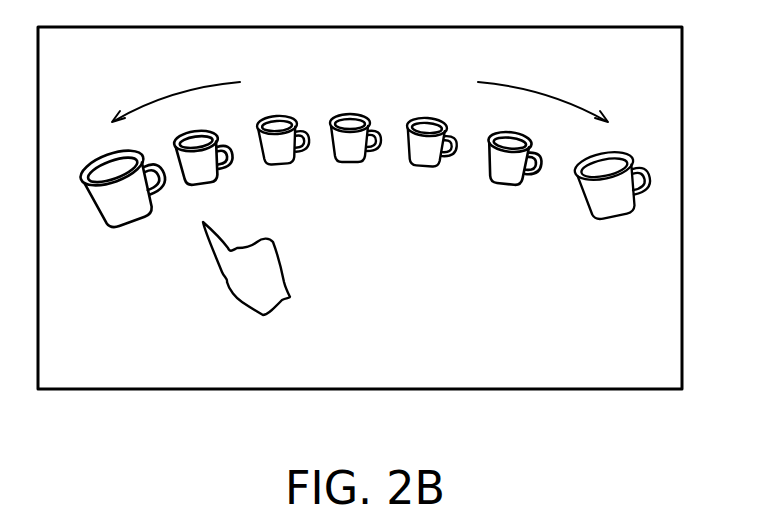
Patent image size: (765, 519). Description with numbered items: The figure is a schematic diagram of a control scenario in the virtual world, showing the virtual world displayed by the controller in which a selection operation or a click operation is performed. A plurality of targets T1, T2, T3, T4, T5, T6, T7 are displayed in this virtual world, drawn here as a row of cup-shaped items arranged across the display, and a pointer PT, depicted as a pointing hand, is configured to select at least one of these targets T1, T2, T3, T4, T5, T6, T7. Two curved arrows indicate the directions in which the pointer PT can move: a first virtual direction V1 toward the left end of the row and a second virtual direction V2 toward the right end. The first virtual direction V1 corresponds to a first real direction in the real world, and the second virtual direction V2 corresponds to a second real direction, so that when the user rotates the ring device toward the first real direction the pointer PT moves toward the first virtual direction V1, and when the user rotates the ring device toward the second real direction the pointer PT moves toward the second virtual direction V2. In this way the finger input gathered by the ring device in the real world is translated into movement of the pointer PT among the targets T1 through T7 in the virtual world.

The first virtual direction V1 is at (176, 91).
The second virtual direction V2 is at (543, 90).
The target T1 is at (127, 212).
The target T2 is at (210, 170).
The target T3 is at (280, 158).
The target T4 is at (350, 153).
The target T5 is at (423, 160).
The target T6 is at (502, 173).
The target T7 is at (590, 208).
The pointer PT is at (248, 292).